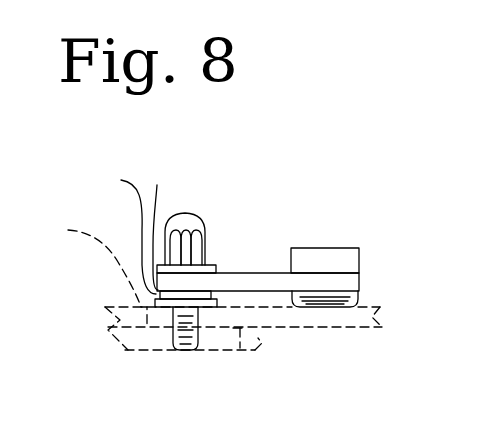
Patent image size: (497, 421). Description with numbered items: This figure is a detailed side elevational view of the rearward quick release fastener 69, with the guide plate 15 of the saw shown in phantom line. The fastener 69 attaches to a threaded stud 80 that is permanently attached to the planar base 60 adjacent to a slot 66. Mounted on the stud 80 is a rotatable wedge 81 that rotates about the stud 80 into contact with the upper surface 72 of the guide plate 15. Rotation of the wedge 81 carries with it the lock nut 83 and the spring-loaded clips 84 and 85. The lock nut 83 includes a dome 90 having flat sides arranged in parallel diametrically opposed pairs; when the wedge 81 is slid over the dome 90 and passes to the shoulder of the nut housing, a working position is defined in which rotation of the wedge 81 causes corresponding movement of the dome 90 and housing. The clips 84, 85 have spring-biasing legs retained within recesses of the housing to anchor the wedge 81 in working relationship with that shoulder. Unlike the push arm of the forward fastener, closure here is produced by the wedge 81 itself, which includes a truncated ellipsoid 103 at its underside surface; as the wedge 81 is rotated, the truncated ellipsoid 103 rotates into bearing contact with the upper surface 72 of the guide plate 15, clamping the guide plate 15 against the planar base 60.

The quick release fastener 69 is at (134, 146).
The spring-loaded clip 85 is at (124, 231).
The spring-loaded clip 84 is at (155, 226).
The lock nut 83 is at (191, 203).
The dome 90 is at (207, 228).
The rotatable wedge 81 is at (248, 262).
The truncated ellipsoid 103 is at (372, 294).
The threaded stud 80 is at (172, 340).
The guide plate 15 is at (116, 300).
The upper surface 72 is at (95, 270).
The planar base 60 is at (108, 352).
The slot 66 is at (274, 352).